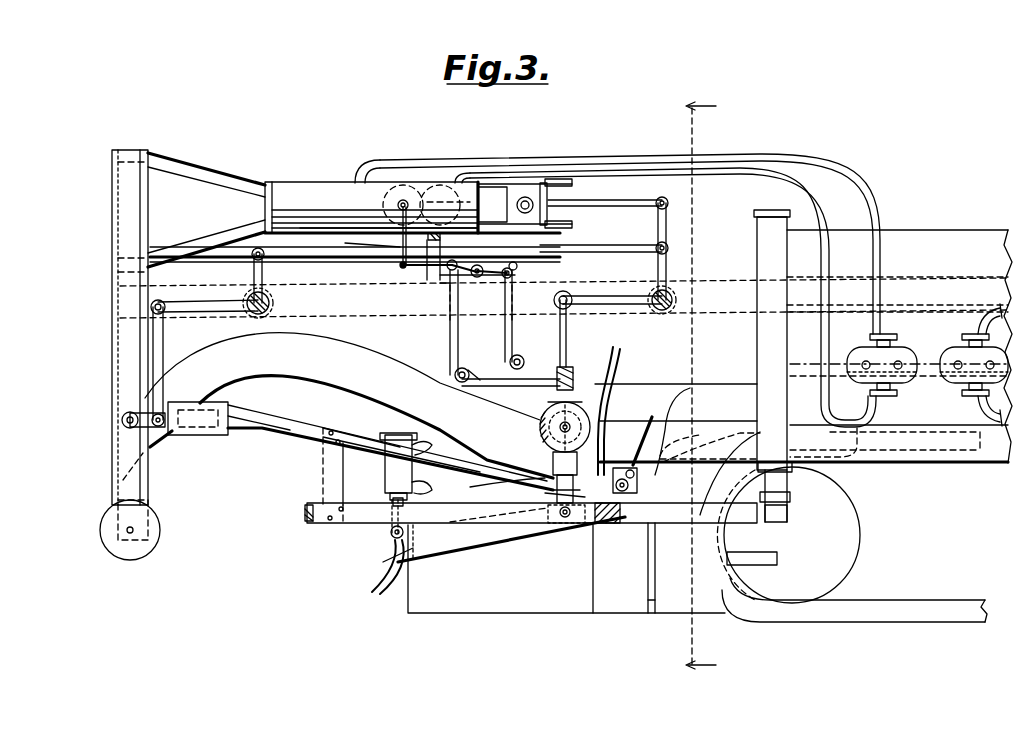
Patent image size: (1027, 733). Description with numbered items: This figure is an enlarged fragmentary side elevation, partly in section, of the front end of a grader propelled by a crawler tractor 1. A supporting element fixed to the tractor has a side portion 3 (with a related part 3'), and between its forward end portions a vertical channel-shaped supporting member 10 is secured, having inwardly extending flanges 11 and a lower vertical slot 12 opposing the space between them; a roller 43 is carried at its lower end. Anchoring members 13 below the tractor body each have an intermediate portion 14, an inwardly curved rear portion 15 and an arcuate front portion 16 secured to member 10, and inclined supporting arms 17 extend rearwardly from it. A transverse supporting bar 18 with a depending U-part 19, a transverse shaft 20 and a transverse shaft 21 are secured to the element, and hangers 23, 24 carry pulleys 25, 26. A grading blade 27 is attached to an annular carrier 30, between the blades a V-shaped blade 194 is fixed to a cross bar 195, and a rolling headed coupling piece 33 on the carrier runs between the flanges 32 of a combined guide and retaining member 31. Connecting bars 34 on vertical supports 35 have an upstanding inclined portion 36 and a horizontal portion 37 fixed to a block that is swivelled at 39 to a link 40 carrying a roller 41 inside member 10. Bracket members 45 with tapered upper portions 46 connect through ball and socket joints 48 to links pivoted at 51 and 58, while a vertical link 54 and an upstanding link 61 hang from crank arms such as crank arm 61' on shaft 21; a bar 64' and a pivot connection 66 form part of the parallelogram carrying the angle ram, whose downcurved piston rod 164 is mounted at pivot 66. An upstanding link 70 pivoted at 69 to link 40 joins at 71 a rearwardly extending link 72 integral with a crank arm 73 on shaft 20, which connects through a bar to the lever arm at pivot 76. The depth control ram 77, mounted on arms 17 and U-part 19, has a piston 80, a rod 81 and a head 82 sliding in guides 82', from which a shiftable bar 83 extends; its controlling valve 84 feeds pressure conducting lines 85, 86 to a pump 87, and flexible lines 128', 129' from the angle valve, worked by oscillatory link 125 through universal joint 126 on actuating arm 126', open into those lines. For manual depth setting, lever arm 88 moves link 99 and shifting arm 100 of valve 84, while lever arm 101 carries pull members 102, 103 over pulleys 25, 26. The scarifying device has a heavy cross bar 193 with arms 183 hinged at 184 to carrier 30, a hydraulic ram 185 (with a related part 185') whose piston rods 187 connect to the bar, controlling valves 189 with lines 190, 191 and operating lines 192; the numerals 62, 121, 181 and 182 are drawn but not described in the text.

The tractor 1 is at (934, 462).
The side portion 3 is at (564, 277).
The frame post 3' is at (761, 366).
The supporting member 10 is at (112, 231).
The flanges 11 is at (152, 170).
The vertical slot 12 is at (115, 485).
The anchoring members 13 is at (433, 387).
The intermediate portion 14 is at (255, 250).
The rear portion 15 is at (338, 225).
The front portion 16 is at (326, 352).
The supporting arms 17 is at (194, 172).
The transverse supporting bar 18 is at (540, 430).
The U-part 19 is at (441, 236).
The transverse shaft 20 is at (270, 297).
The transverse shaft 21 is at (668, 292).
The hanger 23 is at (450, 338).
The hanger 24 is at (514, 332).
The pulley 25 is at (455, 378).
The pulley 26 is at (511, 394).
The grading blade 27 is at (545, 614).
The carrier 30 is at (680, 540).
The combined guide and retaining member 31 is at (795, 485).
The flanges 32 is at (702, 512).
The rolling headed coupling piece 33 is at (783, 522).
The connecting bars 34 is at (358, 440).
The vertical supports 35 is at (323, 473).
The upstanding inclined portion 36 is at (440, 460).
The horizontal portion 37 is at (262, 415).
The swivel connection 39 is at (202, 435).
The link 40 is at (140, 413).
The roller 41 is at (121, 417).
The roller 43 is at (123, 552).
The bracket members 45 is at (606, 513).
The tapered upper portion 46 is at (636, 440).
The ball and socket joint connections 48 is at (552, 498).
The pivot connection 51 is at (668, 428).
The vertical link 54 is at (568, 340).
The pivot connection 58 is at (573, 372).
The upstanding link 61 is at (546, 522).
The crank arm 61' is at (601, 253).
The pivot 62 is at (566, 291).
The bar 64' is at (534, 356).
The pivot connection 66 is at (503, 478).
The pivot connection 69 is at (177, 404).
The upstanding link 70 is at (160, 343).
The pivot connection 71 is at (165, 300).
The rearwardly extending link 72 is at (212, 302).
The upstanding crank arm 73 is at (320, 256).
The pivot connection 76 is at (660, 198).
The depth control ram 77 is at (293, 180).
The piston 80 is at (440, 185).
The rod 81 is at (492, 187).
The head 82 is at (526, 161).
The guides 82' is at (560, 165).
The shiftable bar 83 is at (578, 200).
The controlling valve 84 is at (403, 185).
The pressure conducting line 85 is at (745, 154).
The pressure conducting line 86 is at (788, 172).
The pump 87 is at (902, 352).
The lever arm 88 is at (490, 270).
The link 99 is at (402, 268).
The shifting arm 100 is at (345, 243).
The lever arm 101 is at (467, 302).
The pull member 102 is at (448, 298).
The pull member 103 is at (520, 300).
The ratchet teeth 121 is at (552, 408).
The oscillatory link 125 is at (690, 430).
The universal joint 126 is at (710, 445).
The actuating arm 126' is at (686, 507).
The flexible conducting line 128' is at (633, 410).
The flexible conducting line 129' is at (653, 480).
The piston rod 164 is at (553, 460).
The pipe 181 is at (995, 306).
The pipe 182 is at (1000, 428).
The arms 183 is at (962, 352).
The hinge 184 is at (600, 523).
The hydraulic ram 185 is at (325, 501).
The pulley 185' is at (360, 537).
The piston rods 187 is at (393, 500).
The controlling valves 189 is at (390, 440).
The pressure conducting line 190 is at (412, 440).
The pressure conducting line 191 is at (531, 513).
The operating lines 192 is at (480, 392).
The cross bar 193 is at (378, 594).
The V-shaped blade 194 is at (652, 612).
The cross bar 195 is at (570, 527).